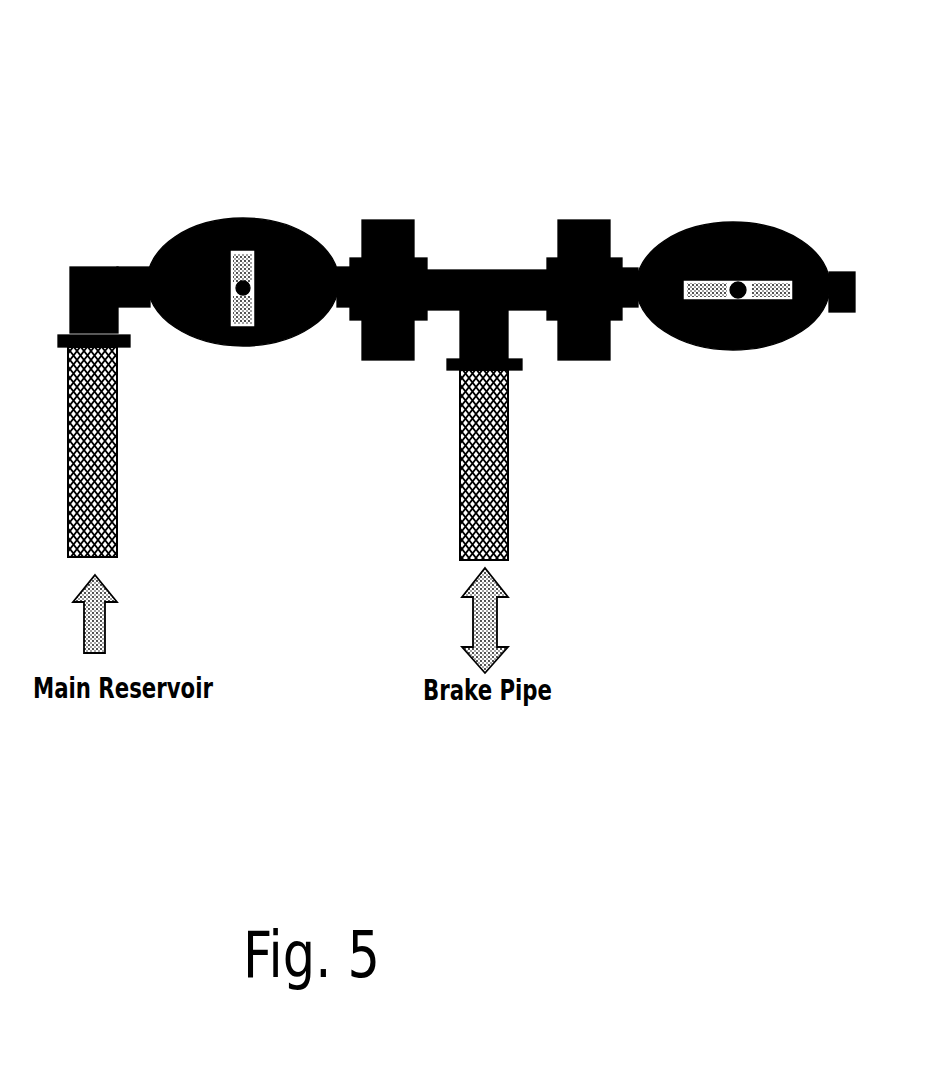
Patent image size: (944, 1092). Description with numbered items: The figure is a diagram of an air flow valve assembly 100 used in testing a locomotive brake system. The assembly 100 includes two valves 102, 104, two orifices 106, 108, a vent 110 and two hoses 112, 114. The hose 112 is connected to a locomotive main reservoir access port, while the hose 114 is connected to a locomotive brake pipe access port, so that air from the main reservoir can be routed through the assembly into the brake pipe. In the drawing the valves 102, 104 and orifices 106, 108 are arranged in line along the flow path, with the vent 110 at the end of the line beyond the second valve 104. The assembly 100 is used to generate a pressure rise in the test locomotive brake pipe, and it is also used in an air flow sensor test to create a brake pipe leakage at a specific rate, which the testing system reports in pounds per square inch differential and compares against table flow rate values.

The air flow valve assembly 100 is at (440, 125).
The valve 102 is at (218, 220).
The valve 104 is at (787, 233).
The orifice 106 is at (393, 220).
The orifice 108 is at (587, 220).
The vent 110 is at (862, 275).
The hose 112 is at (117, 467).
The hose 114 is at (458, 478).